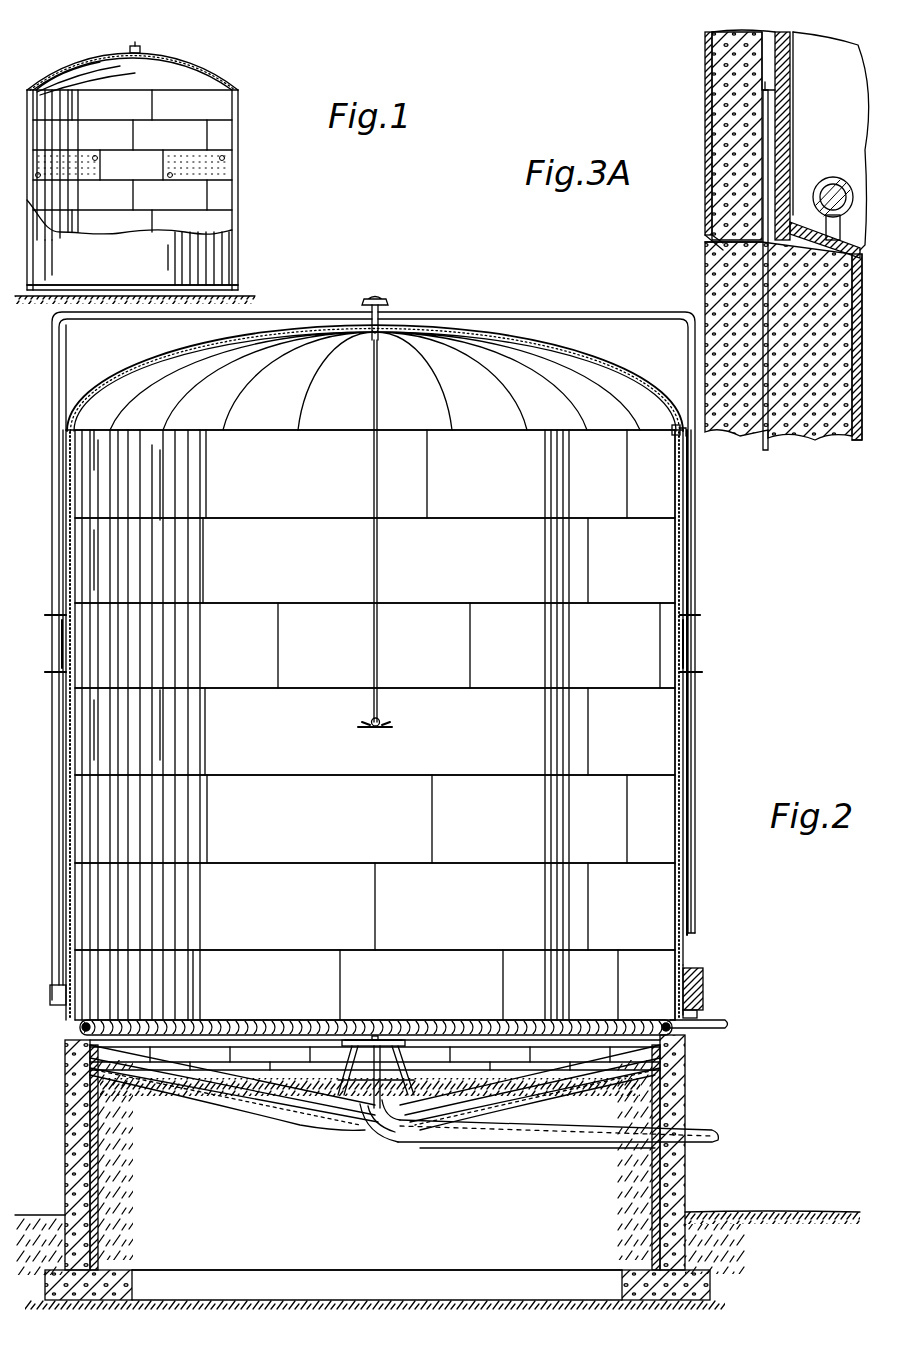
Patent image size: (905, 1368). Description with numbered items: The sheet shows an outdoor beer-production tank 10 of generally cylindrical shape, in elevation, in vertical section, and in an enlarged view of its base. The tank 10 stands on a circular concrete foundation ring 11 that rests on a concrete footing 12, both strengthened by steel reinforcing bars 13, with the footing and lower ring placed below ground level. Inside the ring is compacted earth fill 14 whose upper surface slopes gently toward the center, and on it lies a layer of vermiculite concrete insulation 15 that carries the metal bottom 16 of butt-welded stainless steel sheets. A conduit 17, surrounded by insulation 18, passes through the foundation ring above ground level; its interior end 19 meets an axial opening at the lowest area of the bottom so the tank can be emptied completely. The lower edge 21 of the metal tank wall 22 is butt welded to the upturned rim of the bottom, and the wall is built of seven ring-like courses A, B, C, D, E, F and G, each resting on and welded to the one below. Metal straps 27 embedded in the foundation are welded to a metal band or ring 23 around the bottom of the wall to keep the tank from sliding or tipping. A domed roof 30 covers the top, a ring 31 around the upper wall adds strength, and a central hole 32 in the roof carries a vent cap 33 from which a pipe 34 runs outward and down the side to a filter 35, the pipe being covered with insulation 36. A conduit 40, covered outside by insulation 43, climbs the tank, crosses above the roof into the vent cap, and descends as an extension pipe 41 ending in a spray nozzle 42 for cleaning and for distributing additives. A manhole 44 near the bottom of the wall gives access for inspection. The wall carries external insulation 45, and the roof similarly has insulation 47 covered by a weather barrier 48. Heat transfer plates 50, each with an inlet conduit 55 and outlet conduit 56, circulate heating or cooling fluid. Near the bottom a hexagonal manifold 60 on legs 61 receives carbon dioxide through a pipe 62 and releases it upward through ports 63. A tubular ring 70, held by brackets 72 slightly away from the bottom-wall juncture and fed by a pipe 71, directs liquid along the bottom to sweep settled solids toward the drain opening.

In FIG. 1, the tank 10 is at (252, 211).
In FIG. 2, the tank 10 is at (708, 750).
In FIG. 1, the concrete foundation ring 11 is at (236, 295).
In FIG. 3A, the concrete foundation ring 11 is at (760, 292).
In FIG. 2, the concrete foundation ring 11 is at (687, 1100).
In FIG. 2, the concrete footing 12 is at (92, 1300).
In FIG. 2, the steel reinforcing bars 13 is at (687, 1078).
In FIG. 2, the compacted earth fill 14 is at (212, 1245).
In FIG. 3A, the vermiculite concrete insulation 15 is at (846, 377).
In FIG. 2, the vermiculite concrete insulation 15 is at (312, 1100).
In FIG. 3A, the metal bottom 16 is at (836, 347).
In FIG. 2, the metal bottom 16 is at (270, 1090).
In FIG. 2, the conduit 17 is at (400, 1125).
In FIG. 2, the insulation 18 is at (550, 1125).
In FIG. 2, the interior end 19 is at (380, 1115).
In FIG. 3A, the lower edge 21 is at (785, 150).
In FIG. 2, the metal tank wall 22 is at (683, 715).
In FIG. 3A, the metal band or ring 23 is at (770, 148).
In FIG. 3A, the metal straps 27 is at (760, 268).
In FIG. 1, the roof 30 is at (172, 72).
In FIG. 2, the roof 30 is at (582, 387).
In FIG. 3A, the ring 31 is at (766, 448).
In FIG. 2, the ring 31 is at (686, 436).
In FIG. 2, the hole 32 is at (368, 312).
In FIG. 2, the vent cap 33 is at (390, 306).
In FIG. 2, the pipe 34 is at (192, 322).
In FIG. 2, the filter 35 is at (50, 993).
In FIG. 2, the insulation 36 is at (112, 326).
In FIG. 2, the conduit 40 is at (694, 862).
In FIG. 2, the extension pipe 41 is at (380, 583).
In FIG. 2, the spray nozzle 42 is at (386, 728).
In FIG. 2, the insulation 43 is at (695, 806).
In FIG. 2, the manhole 44 is at (705, 992).
In FIG. 3A, the insulation 45 is at (740, 92).
In FIG. 2, the insulation 45 is at (690, 560).
In FIG. 2, the insulation 47 is at (510, 378).
In FIG. 2, the weather barrier 48 is at (615, 405).
In FIG. 2, the heat transfer plates 50 is at (690, 633).
In FIG. 2, the inlet conduit 55 is at (700, 616).
In FIG. 2, the outlet conduit 56 is at (702, 672).
In FIG. 2, the manifold 60 is at (390, 1040).
In FIG. 2, the legs 61 is at (410, 1060).
In FIG. 2, the pipe 62 is at (78, 1030).
In FIG. 2, the ports 63 is at (365, 1040).
In FIG. 3A, the tubular element or ring 70 is at (847, 178).
In FIG. 2, the tubular element or ring 70 is at (545, 1019).
In FIG. 2, the pipe 71 is at (730, 1020).
In FIG. 3A, the brackets 72 is at (826, 229).
In FIG. 2, the course A is at (660, 957).
In FIG. 2, the course B is at (668, 905).
In FIG. 2, the course C is at (665, 822).
In FIG. 2, the course D is at (665, 758).
In FIG. 2, the course E is at (660, 650).
In FIG. 2, the course F is at (660, 575).
In FIG. 2, the course G is at (665, 500).